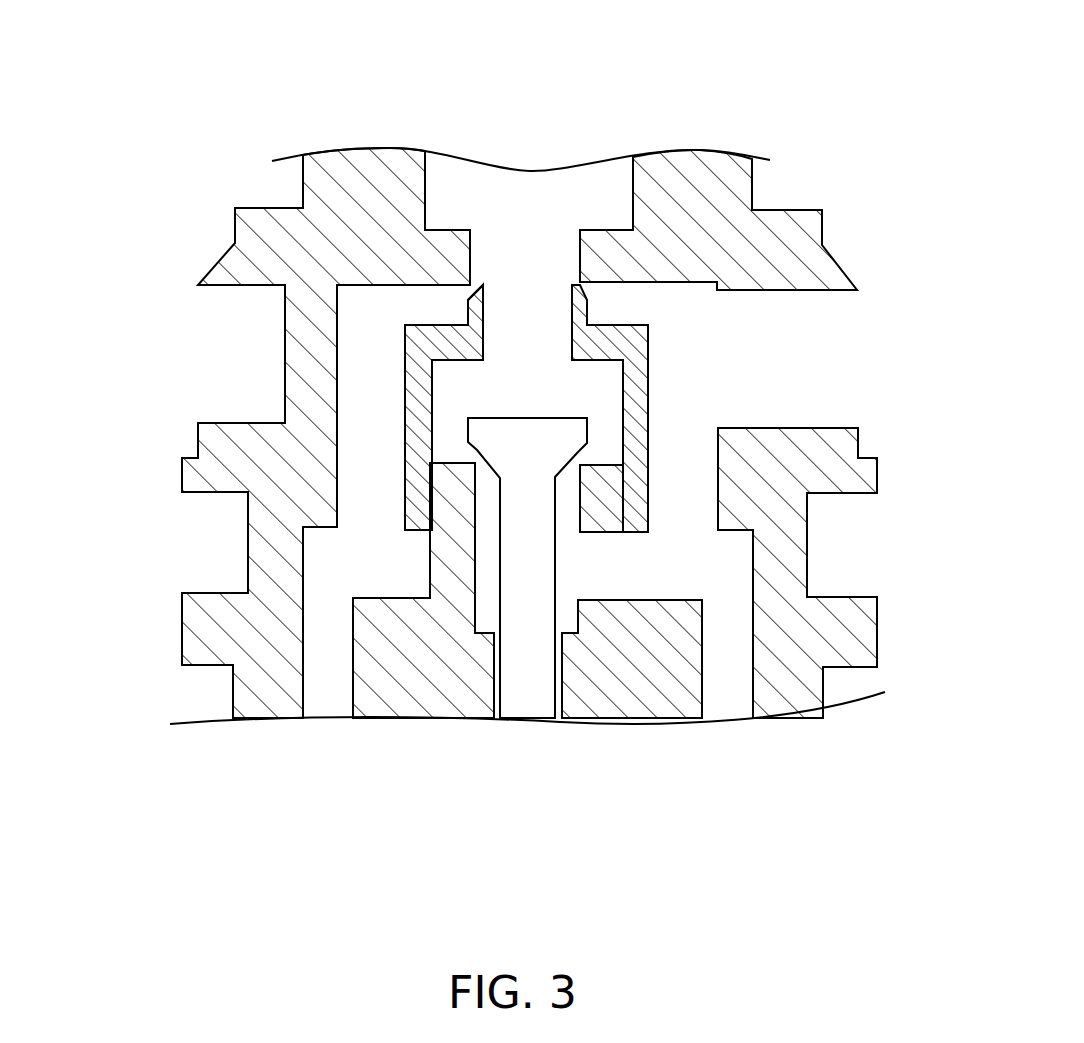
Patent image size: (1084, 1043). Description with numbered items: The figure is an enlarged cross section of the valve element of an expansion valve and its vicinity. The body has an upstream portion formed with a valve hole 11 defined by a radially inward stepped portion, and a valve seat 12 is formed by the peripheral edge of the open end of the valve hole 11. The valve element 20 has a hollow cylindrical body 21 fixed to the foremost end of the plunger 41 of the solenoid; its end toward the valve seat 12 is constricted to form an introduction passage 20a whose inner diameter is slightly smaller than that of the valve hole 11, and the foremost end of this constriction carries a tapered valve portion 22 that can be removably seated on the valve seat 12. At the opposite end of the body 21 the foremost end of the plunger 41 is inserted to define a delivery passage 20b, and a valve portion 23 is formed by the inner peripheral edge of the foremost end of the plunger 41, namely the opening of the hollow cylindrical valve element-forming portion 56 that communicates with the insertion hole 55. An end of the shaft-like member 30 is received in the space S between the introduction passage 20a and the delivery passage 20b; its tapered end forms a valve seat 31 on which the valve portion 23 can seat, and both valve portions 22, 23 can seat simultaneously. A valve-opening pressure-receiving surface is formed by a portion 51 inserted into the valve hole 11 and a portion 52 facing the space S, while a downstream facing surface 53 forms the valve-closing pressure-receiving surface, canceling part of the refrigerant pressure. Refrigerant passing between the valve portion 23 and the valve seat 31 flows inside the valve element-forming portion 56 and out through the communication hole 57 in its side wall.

The valve hole 11 is at (575, 247).
The valve seat 12 is at (590, 278).
The valve element 20 is at (291, 347).
The introduction passage 20a is at (484, 322).
The delivery passage 20b is at (440, 469).
The hollow cylindrical body 21 is at (407, 385).
The valve portion 22 is at (470, 283).
The valve portion 23 is at (467, 463).
The shaft-like member 30 is at (528, 688).
The valve seat 31 is at (569, 446).
The plunger 41 is at (380, 692).
The portion inserted into the valve hole 51 is at (483, 283).
The portion facing the space 52 is at (476, 500).
The downstream facing surface 53 is at (594, 362).
The insertion hole 55 is at (558, 684).
The valve element-forming portion 56 is at (430, 543).
The communication hole 57 is at (602, 535).
The space S is at (593, 395).